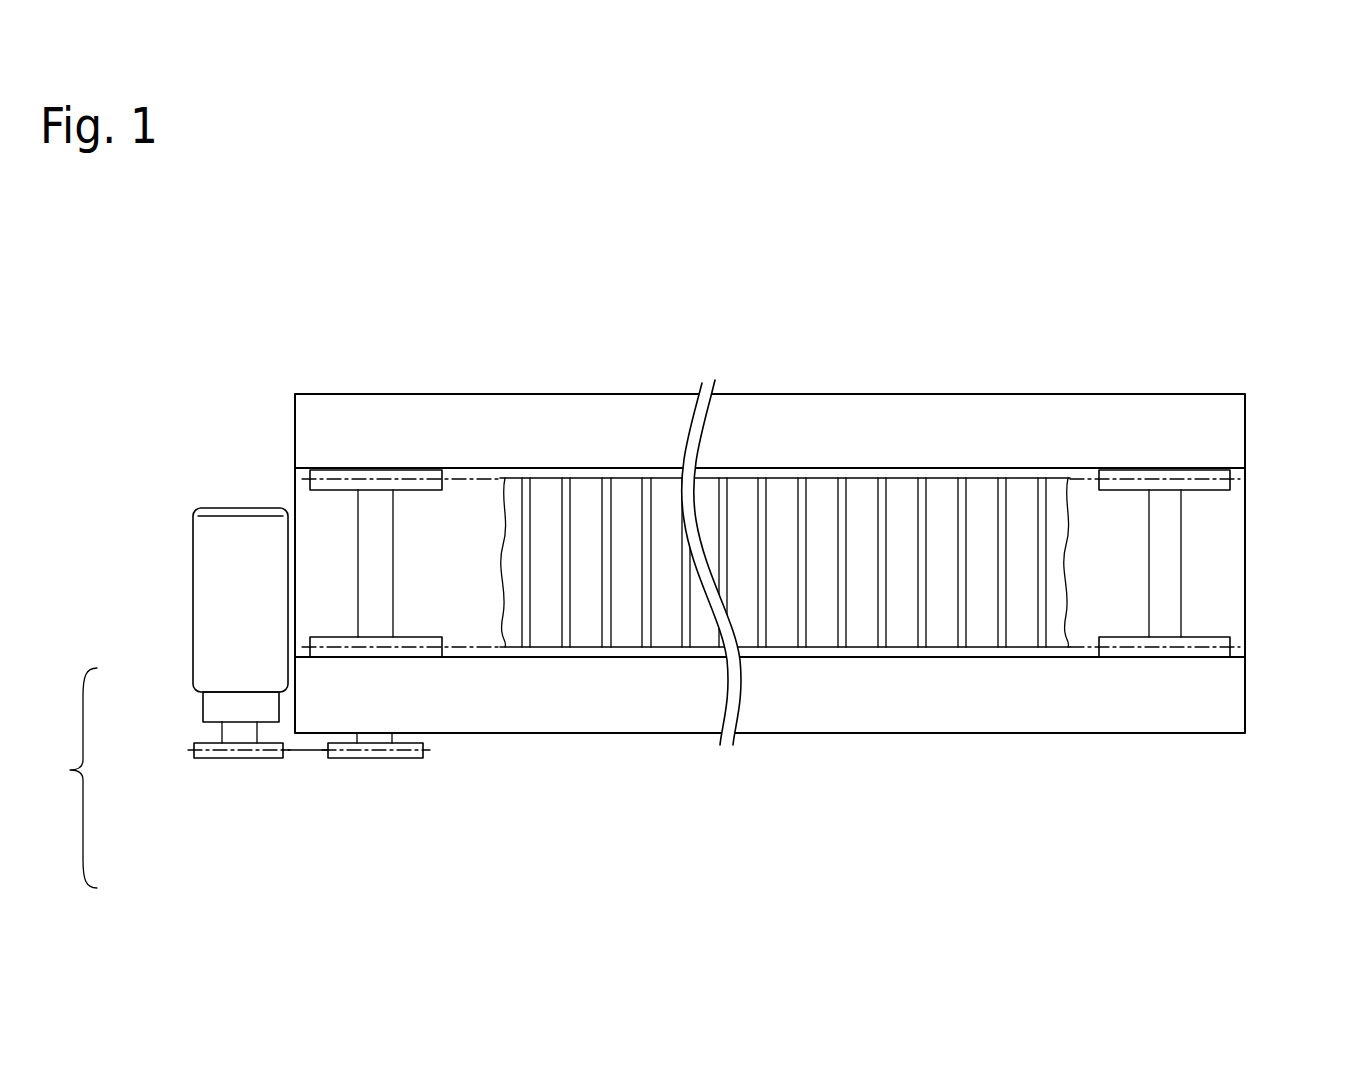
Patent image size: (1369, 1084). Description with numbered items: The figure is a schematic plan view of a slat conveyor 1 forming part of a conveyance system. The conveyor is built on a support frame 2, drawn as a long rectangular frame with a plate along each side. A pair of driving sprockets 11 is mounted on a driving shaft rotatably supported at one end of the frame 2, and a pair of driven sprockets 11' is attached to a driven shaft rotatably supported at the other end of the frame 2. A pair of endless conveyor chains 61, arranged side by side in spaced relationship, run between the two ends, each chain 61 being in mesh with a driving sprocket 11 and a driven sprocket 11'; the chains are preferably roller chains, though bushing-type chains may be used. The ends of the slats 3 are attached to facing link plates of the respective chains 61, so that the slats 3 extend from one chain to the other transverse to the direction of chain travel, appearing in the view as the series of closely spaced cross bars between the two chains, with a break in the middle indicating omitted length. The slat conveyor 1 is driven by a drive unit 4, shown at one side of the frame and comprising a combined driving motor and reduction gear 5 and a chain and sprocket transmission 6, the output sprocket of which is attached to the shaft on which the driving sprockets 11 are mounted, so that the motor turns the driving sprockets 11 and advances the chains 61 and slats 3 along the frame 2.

The slat conveyor 1 is at (1036, 361).
The support frame 2 is at (943, 425).
The slats 3 is at (586, 497).
The drive unit 4 is at (186, 778).
The combined driving motor and reduction gear 5 is at (188, 680).
The chain and sprocket transmission 6 is at (273, 767).
The driving sprockets 11 is at (417, 563).
The driven sprockets 11' is at (1229, 563).
The endless conveyor chains 61 is at (650, 477).